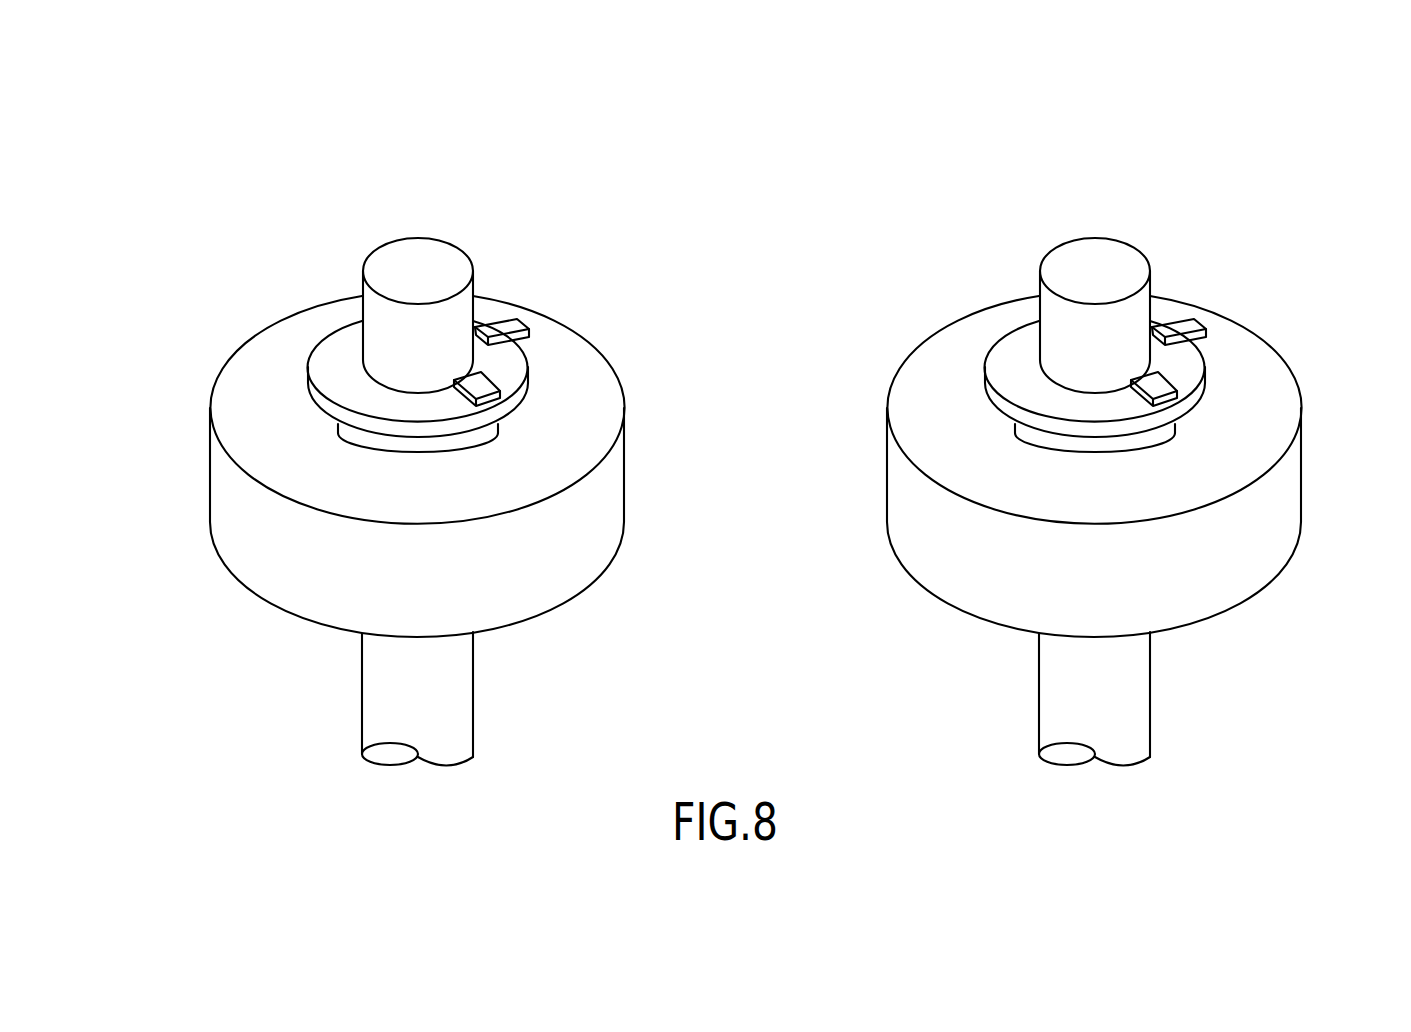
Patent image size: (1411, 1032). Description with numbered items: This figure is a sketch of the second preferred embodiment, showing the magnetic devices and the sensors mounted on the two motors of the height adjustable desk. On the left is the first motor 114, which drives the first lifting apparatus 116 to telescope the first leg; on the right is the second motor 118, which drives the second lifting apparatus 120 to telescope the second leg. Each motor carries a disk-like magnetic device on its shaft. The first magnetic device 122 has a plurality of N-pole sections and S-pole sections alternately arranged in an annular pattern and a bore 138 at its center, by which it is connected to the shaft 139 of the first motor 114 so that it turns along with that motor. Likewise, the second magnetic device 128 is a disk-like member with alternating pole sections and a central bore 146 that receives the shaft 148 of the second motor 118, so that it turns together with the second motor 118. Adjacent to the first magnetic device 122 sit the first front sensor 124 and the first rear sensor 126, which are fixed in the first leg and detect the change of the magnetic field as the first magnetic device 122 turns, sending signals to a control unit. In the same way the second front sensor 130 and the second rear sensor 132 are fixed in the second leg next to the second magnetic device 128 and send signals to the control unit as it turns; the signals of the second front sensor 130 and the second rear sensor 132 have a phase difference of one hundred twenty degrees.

The first motor 114 is at (238, 378).
The first lifting apparatus 116 is at (395, 697).
The second motor 118 is at (1059, 438).
The second lifting apparatus 120 is at (1185, 699).
The first magnetic device 122 is at (333, 337).
The first front sensor 124 is at (483, 390).
The first rear sensor 126 is at (517, 318).
The second magnetic device 128 is at (1060, 301).
The second front sensor 130 is at (1270, 379).
The second rear sensor 132 is at (1226, 267).
The bore 138 is at (375, 383).
The first hub 139 is at (408, 260).
The bore 146 is at (983, 483).
The shaft 148 is at (1095, 254).